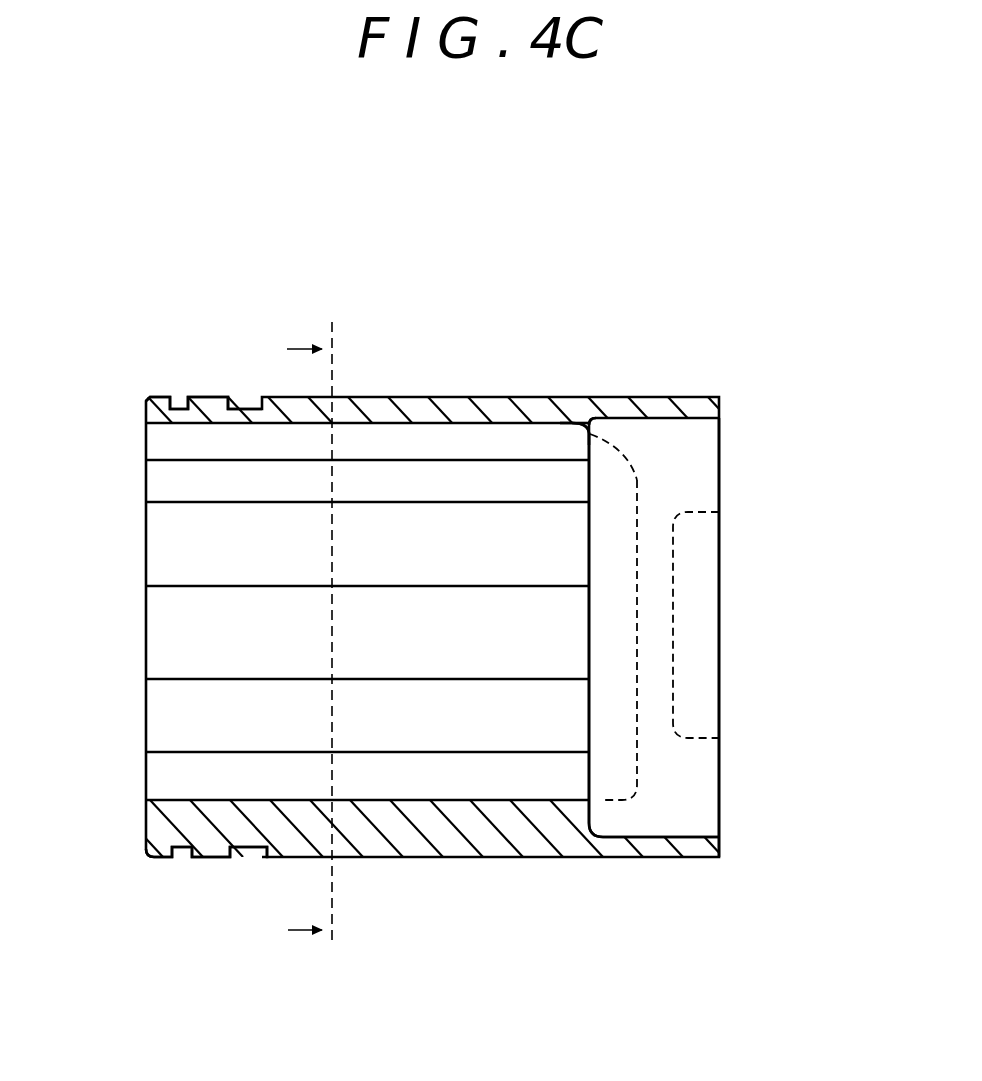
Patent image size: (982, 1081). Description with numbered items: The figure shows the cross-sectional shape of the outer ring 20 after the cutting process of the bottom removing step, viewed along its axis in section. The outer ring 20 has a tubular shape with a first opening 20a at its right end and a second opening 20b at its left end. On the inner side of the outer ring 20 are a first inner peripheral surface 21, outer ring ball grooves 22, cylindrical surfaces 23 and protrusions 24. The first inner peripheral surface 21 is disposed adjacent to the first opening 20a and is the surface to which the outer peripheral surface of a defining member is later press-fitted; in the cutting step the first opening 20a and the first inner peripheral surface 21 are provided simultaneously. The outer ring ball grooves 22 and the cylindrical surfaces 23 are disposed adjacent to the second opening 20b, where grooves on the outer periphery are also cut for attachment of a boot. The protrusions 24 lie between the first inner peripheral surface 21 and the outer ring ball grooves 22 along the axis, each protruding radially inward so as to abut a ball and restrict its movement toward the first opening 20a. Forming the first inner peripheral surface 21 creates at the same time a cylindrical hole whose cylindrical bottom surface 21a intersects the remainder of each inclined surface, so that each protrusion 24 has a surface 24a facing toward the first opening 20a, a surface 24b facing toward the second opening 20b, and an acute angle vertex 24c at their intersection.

The outer ring 20 is at (128, 886).
The first opening 20a is at (705, 836).
The second opening 20b is at (158, 425).
The first inner peripheral surface 21 is at (677, 837).
The cylindrical bottom surface 21a is at (590, 478).
The outer ring ball groove 22 is at (470, 418).
The cylindrical surface 23 is at (483, 800).
The protrusion 24 is at (588, 432).
The surface facing toward the first opening 24a is at (602, 424).
The surface facing toward the second opening 24b is at (566, 426).
The acute angle vertex 24c is at (620, 450).